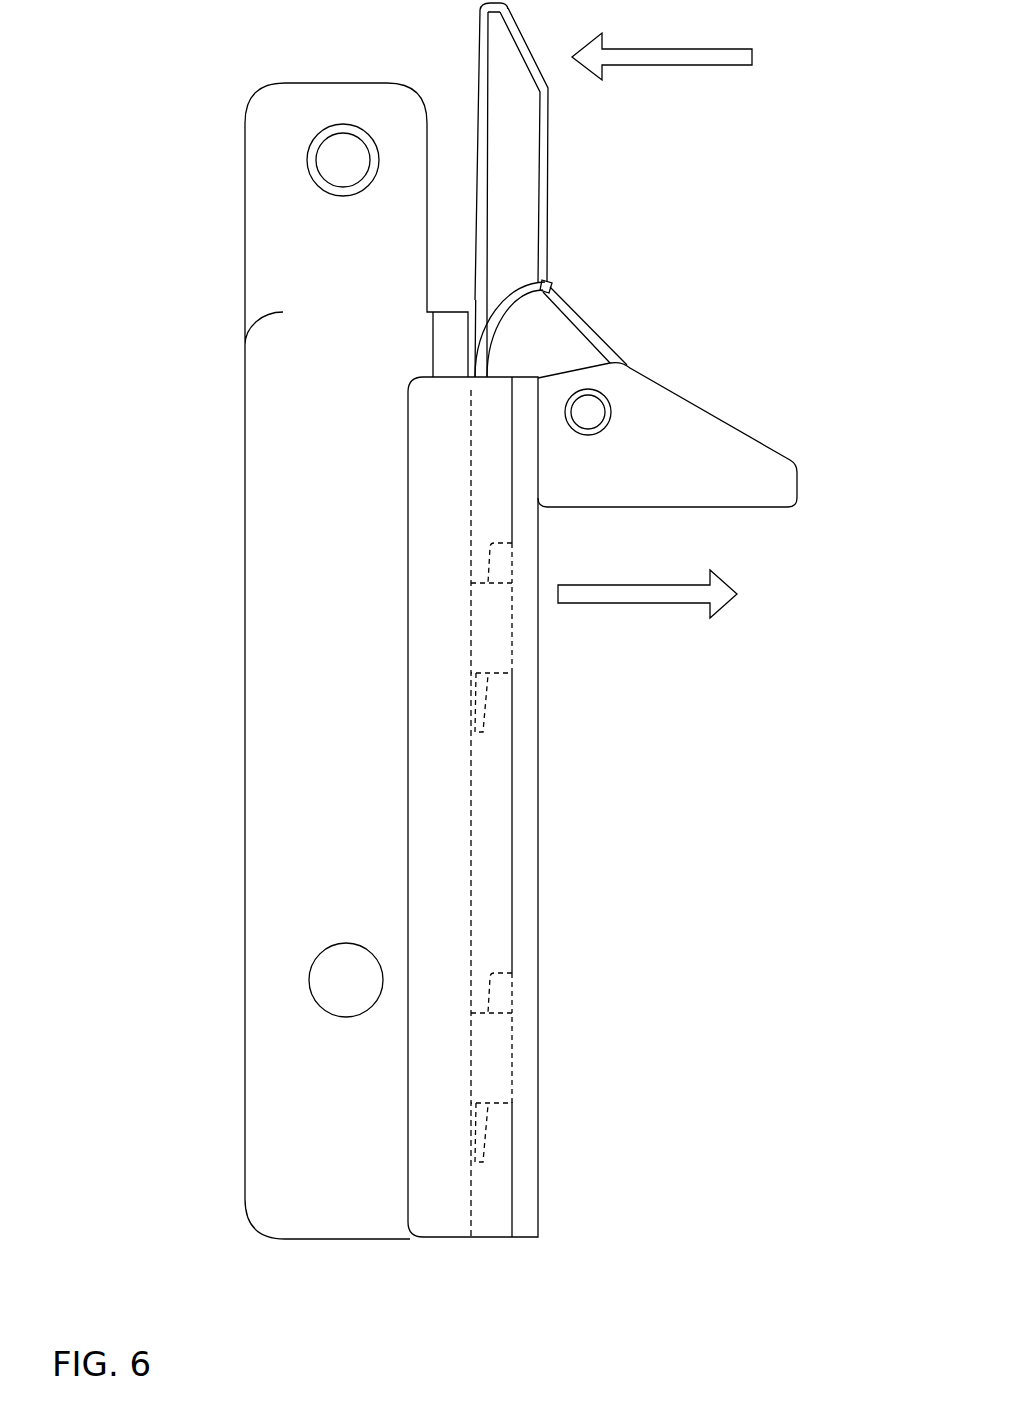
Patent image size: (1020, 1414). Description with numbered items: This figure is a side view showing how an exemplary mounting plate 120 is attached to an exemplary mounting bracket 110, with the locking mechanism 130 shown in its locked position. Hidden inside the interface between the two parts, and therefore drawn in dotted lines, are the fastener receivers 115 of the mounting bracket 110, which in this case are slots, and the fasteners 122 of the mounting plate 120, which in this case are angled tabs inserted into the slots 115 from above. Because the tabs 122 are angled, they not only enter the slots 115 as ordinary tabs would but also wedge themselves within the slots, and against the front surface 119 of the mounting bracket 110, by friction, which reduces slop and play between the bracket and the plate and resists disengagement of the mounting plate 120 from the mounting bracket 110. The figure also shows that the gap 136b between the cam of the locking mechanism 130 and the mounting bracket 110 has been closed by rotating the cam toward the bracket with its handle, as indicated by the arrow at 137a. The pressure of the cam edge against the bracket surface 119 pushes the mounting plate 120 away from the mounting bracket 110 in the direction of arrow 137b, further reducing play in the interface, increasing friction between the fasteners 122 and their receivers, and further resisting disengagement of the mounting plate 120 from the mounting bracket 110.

The mounting bracket 110 is at (199, 1006).
The fastener receivers 115 is at (488, 1057).
The front surface of the mounting bracket 119 is at (472, 817).
The mounting plate 120 is at (631, 1033).
The fasteners 122 is at (502, 992).
The locking mechanism 130 is at (692, 215).
The gap 136b is at (470, 287).
The arrow 137a is at (765, 78).
The arrow 137b is at (642, 617).